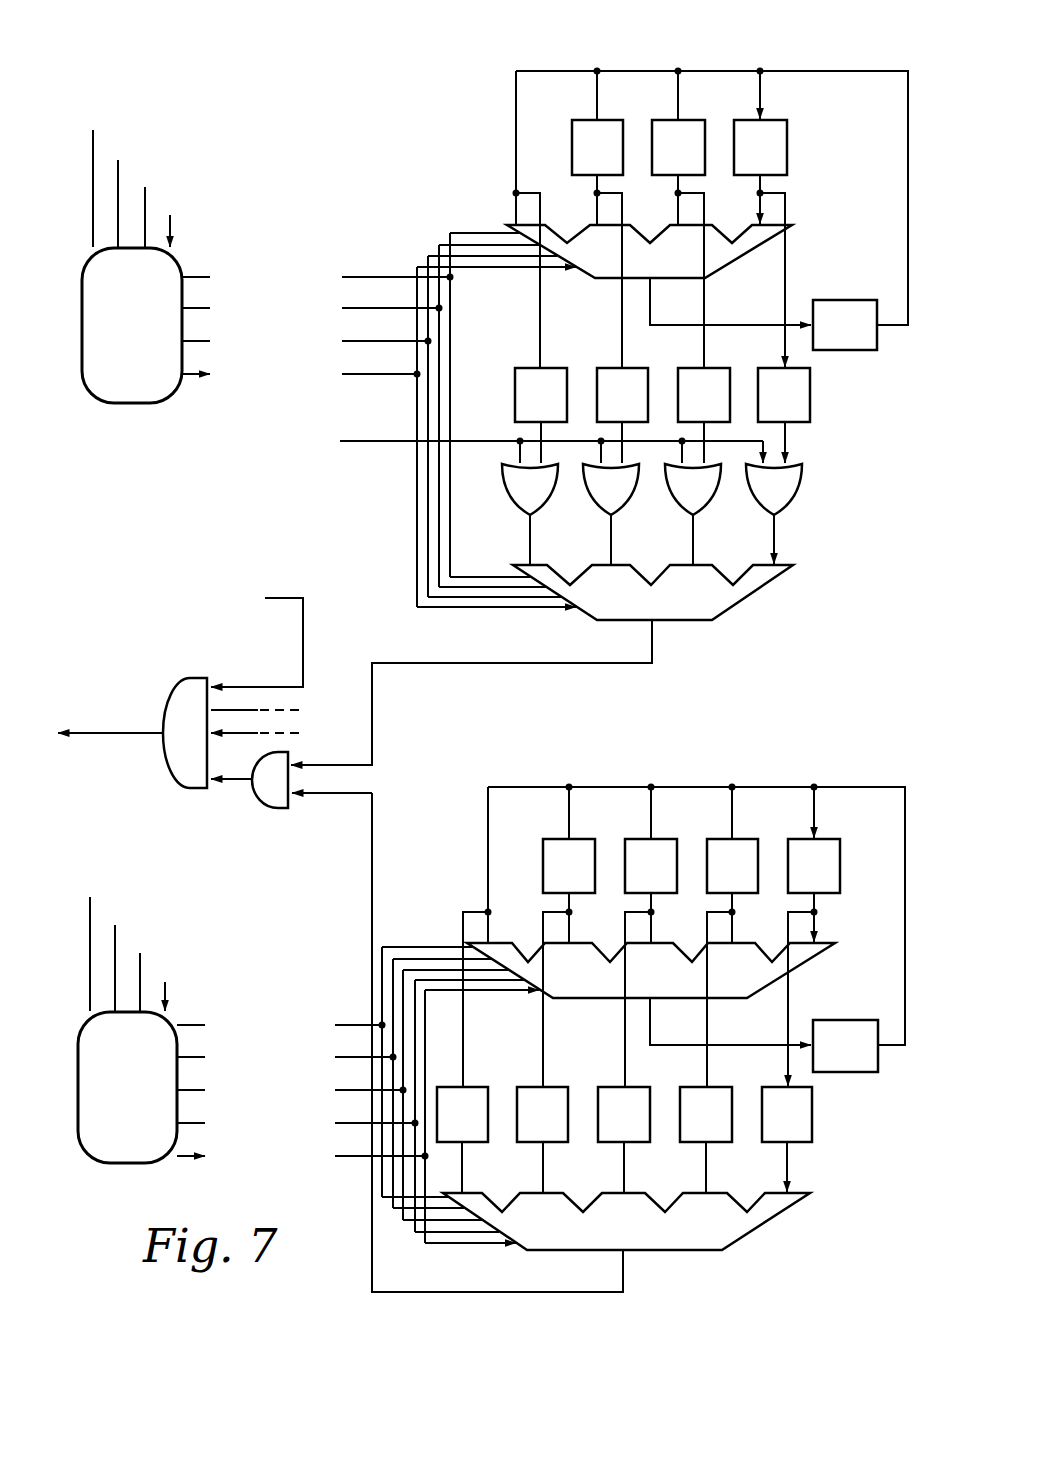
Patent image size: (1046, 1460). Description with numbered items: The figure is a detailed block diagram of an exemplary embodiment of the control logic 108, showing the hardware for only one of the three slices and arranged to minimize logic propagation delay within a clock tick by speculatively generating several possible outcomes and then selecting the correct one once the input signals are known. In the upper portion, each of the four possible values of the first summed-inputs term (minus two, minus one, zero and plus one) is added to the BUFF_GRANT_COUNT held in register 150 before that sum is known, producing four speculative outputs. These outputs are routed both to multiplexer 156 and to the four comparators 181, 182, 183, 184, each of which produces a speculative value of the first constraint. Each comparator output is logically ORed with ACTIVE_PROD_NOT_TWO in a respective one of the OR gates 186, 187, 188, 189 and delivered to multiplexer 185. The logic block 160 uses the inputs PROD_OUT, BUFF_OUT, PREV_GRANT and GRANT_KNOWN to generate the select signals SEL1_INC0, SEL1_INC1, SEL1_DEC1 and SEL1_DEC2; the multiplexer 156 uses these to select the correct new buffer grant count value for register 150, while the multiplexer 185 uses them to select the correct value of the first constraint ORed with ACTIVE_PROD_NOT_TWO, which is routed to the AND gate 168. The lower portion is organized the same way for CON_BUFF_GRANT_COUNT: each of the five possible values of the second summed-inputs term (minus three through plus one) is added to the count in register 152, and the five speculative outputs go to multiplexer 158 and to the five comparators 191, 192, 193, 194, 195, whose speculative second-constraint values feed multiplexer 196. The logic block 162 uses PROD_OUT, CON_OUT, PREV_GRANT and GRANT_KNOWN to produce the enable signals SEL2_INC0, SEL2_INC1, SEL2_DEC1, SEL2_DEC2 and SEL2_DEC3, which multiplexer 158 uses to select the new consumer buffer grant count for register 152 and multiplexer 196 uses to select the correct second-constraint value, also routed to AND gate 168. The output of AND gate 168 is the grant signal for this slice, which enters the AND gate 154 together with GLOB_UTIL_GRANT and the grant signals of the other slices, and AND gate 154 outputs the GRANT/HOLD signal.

The control logic 108 is at (154, 54).
The register 150 is at (855, 300).
The register 152 is at (857, 1072).
The AND gate 154 is at (178, 790).
The multiplexer 156 is at (738, 262).
The multiplexer 158 is at (824, 952).
The logic block 160 is at (160, 366).
The logic block 162 is at (156, 1128).
The AND gate 168 is at (270, 808).
The comparator 181 is at (553, 367).
The comparator 182 is at (635, 367).
The comparator 183 is at (716, 367).
The comparator 184 is at (810, 392).
The multiplexer 185 is at (748, 600).
The OR gate 186 is at (548, 498).
The OR gate 187 is at (629, 498).
The OR gate 188 is at (711, 498).
The OR gate 189 is at (792, 498).
The comparator 191 is at (480, 1142).
The comparator 192 is at (561, 1142).
The comparator 193 is at (642, 1142).
The comparator 194 is at (723, 1142).
The comparator 195 is at (805, 1142).
The multiplexer 196 is at (770, 1222).